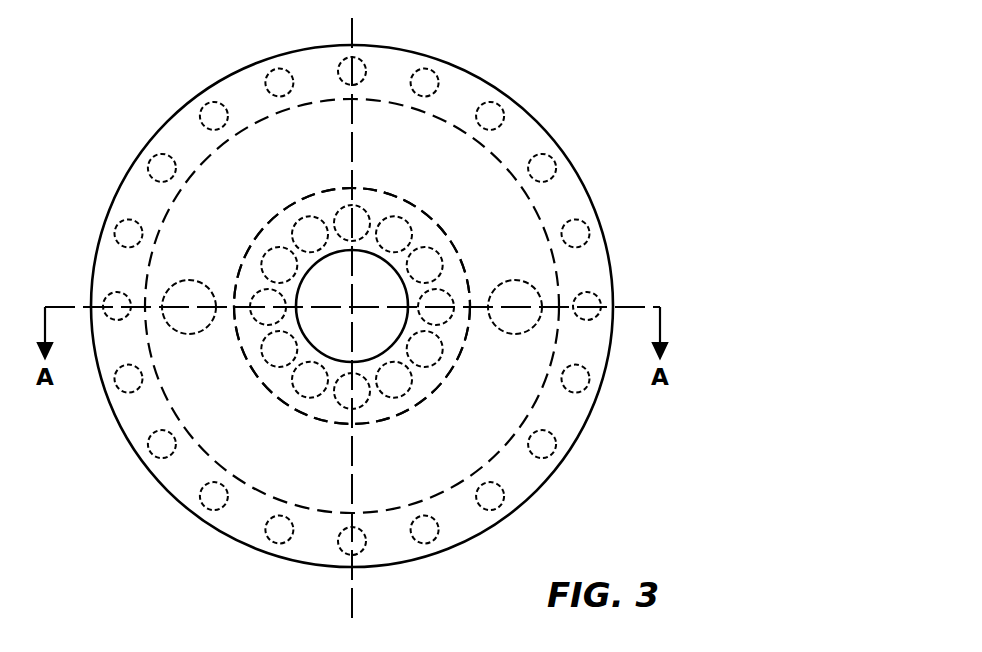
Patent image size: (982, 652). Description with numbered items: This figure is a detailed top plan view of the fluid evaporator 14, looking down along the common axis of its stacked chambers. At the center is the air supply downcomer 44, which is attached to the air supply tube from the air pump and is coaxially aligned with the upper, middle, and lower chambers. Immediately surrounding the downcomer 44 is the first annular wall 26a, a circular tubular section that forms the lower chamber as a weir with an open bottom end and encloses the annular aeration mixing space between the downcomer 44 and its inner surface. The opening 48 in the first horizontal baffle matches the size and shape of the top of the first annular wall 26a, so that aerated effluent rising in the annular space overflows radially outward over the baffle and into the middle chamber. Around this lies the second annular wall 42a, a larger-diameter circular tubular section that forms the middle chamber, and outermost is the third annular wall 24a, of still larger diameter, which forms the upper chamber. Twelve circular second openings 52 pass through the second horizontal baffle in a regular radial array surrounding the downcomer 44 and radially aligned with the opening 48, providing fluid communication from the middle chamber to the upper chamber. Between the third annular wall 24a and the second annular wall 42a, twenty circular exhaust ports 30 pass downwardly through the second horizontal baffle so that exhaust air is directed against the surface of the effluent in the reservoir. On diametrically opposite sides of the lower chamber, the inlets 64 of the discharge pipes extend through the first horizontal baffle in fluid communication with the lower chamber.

The fluid evaporator 14 is at (351, 301).
The third annular wall 24a is at (108, 212).
The first annular wall 26a is at (273, 213).
The exhaust ports 30 is at (262, 530).
The second annular wall 42a is at (168, 200).
The air supply downcomer 44 is at (343, 251).
The opening 48 is at (260, 232).
The second openings 52 is at (410, 220).
The inlets 64 is at (168, 285).